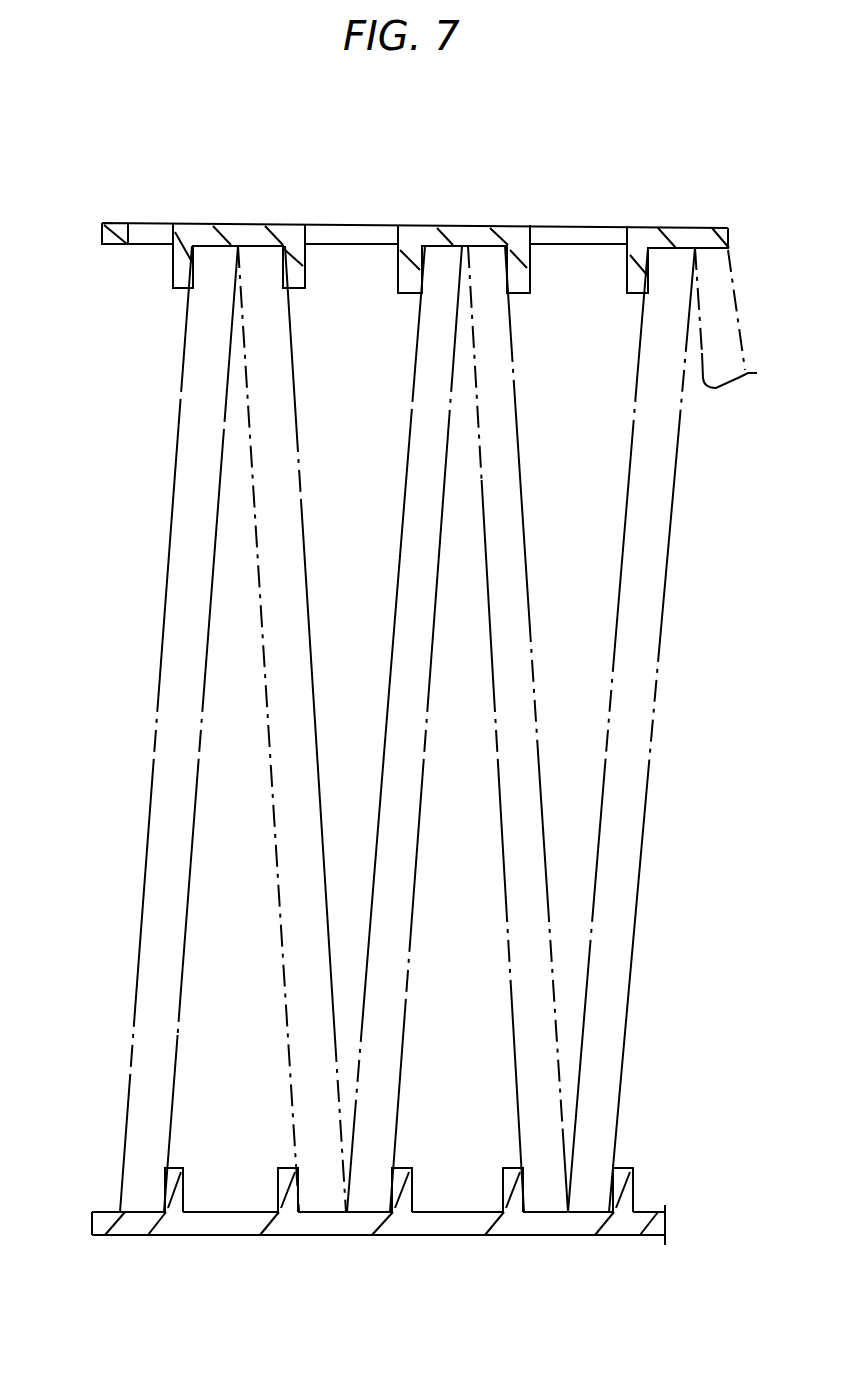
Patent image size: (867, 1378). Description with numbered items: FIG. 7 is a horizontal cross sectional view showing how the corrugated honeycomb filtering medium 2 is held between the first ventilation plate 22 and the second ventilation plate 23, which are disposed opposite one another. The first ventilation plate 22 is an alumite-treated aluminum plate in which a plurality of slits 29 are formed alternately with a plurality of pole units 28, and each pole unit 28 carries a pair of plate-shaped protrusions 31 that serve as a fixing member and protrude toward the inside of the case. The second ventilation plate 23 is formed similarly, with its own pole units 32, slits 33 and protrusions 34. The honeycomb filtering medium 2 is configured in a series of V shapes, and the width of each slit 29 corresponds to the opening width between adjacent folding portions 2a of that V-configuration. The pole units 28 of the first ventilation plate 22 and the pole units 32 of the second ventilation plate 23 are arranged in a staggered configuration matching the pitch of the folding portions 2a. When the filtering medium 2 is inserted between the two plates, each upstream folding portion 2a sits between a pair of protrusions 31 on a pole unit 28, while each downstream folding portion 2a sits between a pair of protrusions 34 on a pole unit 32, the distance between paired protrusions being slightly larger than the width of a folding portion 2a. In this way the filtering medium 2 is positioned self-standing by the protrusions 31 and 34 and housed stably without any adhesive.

The corrugated honeycomb filtering medium 2 is at (163, 602).
The folding portion (apex portion) 2a is at (250, 232).
The first ventilation plate 22 is at (120, 223).
The second ventilation plate 23 is at (105, 1235).
The pole unit 28 is at (188, 232).
The slit 29 is at (340, 232).
The protrusion (fixing member) 31 is at (180, 271).
The pole unit 32 is at (378, 1236).
The slit 33 is at (245, 1235).
The protrusion (fixing member) 34 is at (280, 1188).